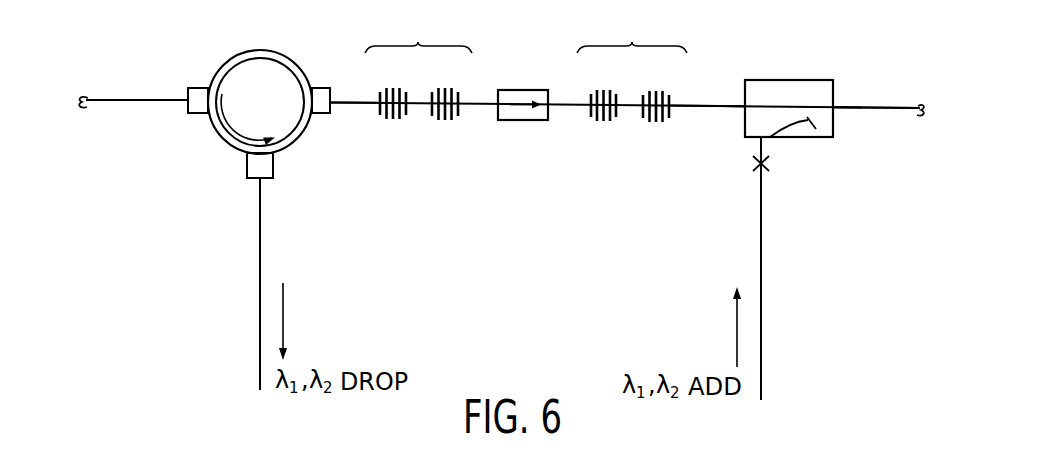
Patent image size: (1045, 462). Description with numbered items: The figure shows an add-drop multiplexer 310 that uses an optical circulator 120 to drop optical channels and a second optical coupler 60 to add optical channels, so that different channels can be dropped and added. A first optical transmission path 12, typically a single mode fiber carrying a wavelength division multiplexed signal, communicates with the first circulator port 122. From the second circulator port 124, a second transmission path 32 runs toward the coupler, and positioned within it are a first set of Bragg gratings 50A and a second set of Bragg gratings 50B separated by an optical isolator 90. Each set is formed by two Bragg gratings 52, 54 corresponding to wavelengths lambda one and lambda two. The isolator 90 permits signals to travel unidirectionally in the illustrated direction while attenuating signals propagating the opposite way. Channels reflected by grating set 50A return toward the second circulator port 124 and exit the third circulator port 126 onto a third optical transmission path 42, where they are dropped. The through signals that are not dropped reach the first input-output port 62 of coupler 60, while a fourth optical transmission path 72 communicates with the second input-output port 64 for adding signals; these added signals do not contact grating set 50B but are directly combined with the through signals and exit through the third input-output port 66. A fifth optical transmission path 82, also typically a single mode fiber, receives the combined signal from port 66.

The first optical transmission path 12 is at (130, 100).
The optical circulator 120 is at (260, 50).
The first circulator port 122 is at (198, 88).
The second circulator port 124 is at (322, 88).
The third circulator port 126 is at (247, 165).
The second transmission path 32 is at (348, 102).
The first set of Bragg gratings 50A is at (418, 67).
The second set of Bragg gratings 50B is at (632, 66).
The Bragg grating 52 is at (390, 120).
The Bragg grating 54 is at (440, 121).
The optical isolator 90 is at (528, 90).
The second optical coupler 60 is at (775, 80).
The first input-output port 62 is at (745, 108).
The second input-output port 64 is at (770, 137).
The third input-output port 66 is at (838, 108).
The fifth optical transmission path 82 is at (885, 108).
The fourth optical transmission path 72 is at (762, 255).
The third optical transmission path 42 is at (260, 245).
The add-drop multiplexer 310 is at (569, 276).